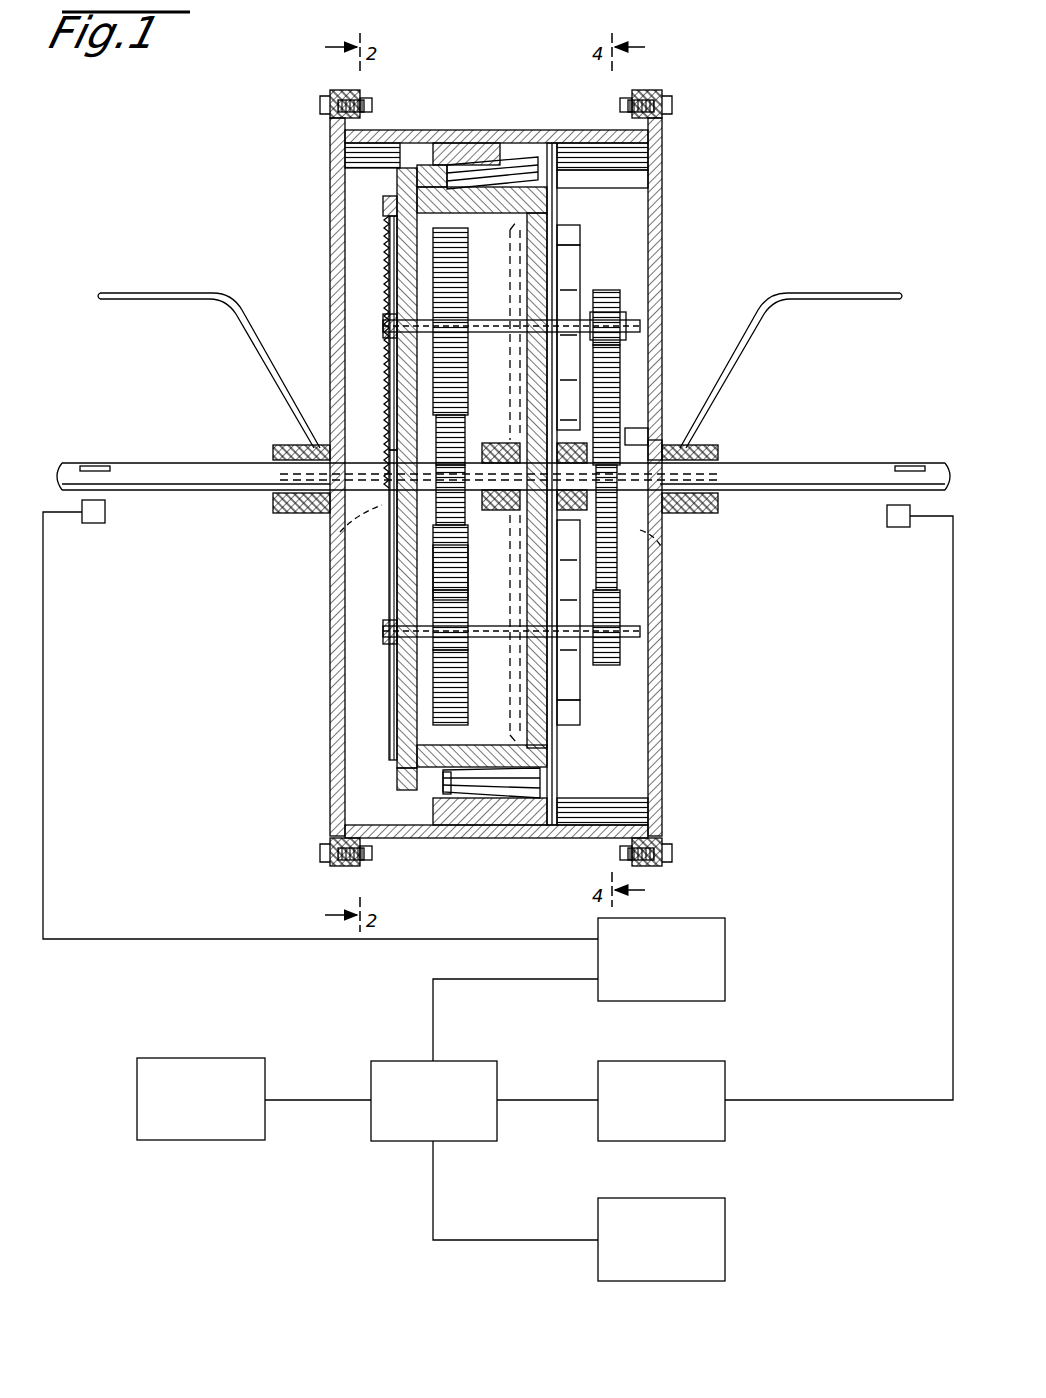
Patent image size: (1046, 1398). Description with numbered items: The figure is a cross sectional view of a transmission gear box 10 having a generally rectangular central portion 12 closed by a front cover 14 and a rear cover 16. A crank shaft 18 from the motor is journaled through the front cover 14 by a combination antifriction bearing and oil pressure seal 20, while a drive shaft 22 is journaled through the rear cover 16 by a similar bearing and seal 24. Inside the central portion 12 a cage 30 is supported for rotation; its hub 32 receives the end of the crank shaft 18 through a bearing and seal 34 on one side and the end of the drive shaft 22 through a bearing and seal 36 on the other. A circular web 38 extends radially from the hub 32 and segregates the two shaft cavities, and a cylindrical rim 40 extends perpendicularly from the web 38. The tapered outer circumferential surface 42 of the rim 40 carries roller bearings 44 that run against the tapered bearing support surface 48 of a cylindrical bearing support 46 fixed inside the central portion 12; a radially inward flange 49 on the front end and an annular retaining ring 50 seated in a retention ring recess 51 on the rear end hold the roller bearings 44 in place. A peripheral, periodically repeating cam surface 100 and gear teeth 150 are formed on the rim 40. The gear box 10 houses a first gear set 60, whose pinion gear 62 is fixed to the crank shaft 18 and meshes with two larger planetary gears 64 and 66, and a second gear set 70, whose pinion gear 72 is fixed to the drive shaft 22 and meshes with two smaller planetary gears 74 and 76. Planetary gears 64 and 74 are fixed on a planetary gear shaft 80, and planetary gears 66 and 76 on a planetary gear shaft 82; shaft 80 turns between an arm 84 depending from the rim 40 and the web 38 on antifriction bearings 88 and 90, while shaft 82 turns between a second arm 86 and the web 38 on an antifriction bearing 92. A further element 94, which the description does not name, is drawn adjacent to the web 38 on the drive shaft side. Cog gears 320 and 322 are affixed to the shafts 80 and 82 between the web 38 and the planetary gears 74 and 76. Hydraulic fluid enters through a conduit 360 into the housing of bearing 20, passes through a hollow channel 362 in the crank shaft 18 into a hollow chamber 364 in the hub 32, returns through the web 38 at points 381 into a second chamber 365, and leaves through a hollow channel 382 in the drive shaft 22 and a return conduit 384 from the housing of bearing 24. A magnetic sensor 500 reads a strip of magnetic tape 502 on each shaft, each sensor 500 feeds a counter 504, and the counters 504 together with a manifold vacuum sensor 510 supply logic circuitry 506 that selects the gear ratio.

The gear box 10 is at (554, 95).
The central portion 12 is at (505, 128).
The front cover 14 is at (345, 612).
The rear cover 16 is at (632, 532).
The crank shaft 18 is at (180, 468).
The combination antifriction bearing and oil pressure seal 20 is at (300, 512).
The drive shaft 22 is at (806, 488).
The combination antifriction bearing and oil pressure seal 24 is at (690, 516).
The cage 30 is at (560, 177).
The hub 32 is at (636, 430).
The combination antifriction bearing and oil pressure seal 34 is at (520, 512).
The combination antifriction bearing and oil pressure seal 36 is at (610, 530).
The web 38 is at (545, 196).
The rim 40 is at (397, 238).
The outer circumferential surface 42 is at (437, 178).
The roller bearings 44 is at (485, 165).
The bearing support 46 is at (485, 802).
The bearing support surface 48 is at (470, 778).
The circumferential flange 49 is at (400, 790).
The annular retaining ring 50 is at (565, 150).
The annular retention ring recess 51 is at (556, 140).
The first gear set 60 is at (408, 580).
The pinion gear 62 is at (440, 455).
The planetary gear 64 is at (438, 560).
The planetary gear 66 is at (394, 368).
The second gear set 70 is at (626, 376).
The pinion gear 72 is at (612, 400).
The planetary gear 74 is at (620, 656).
The planetary gear 76 is at (612, 303).
The planetary gear shaft 80 is at (400, 632).
The planetary gear shaft 82 is at (485, 330).
The arm 84 is at (395, 670).
The second arm 86 is at (408, 322).
The antifriction bearing 88 is at (400, 652).
The antifriction bearing 90 is at (528, 650).
The antifriction bearing 92 is at (386, 342).
The plate cap 94 is at (562, 262).
The cam surface 100 is at (400, 172).
The gear teeth 150 is at (392, 205).
The cog gear 320 is at (580, 716).
The cog gear 322 is at (572, 232).
The conduit 360 is at (180, 292).
The hollow channel 362 is at (345, 545).
The hollow chamber 364 is at (566, 622).
The second chamber 365 is at (652, 440).
The points 381 is at (622, 340).
The hollow channel 382 is at (655, 535).
The return conduit 384 is at (836, 300).
The magnetic sensor 500 is at (100, 522).
The strip of magnetic tape 502 is at (90, 464).
The counter 504 is at (725, 960).
The logic circuitry 506 is at (375, 1136).
The sensor 510 is at (680, 1270).